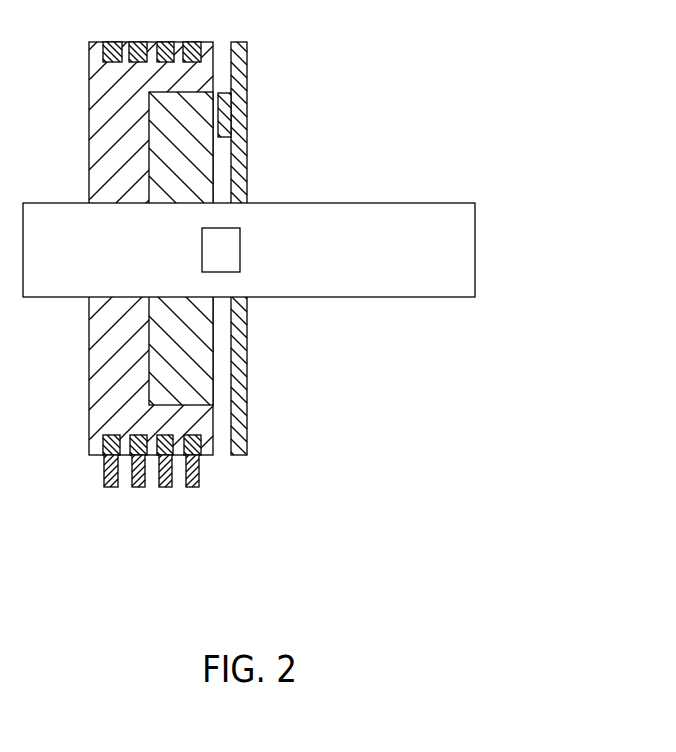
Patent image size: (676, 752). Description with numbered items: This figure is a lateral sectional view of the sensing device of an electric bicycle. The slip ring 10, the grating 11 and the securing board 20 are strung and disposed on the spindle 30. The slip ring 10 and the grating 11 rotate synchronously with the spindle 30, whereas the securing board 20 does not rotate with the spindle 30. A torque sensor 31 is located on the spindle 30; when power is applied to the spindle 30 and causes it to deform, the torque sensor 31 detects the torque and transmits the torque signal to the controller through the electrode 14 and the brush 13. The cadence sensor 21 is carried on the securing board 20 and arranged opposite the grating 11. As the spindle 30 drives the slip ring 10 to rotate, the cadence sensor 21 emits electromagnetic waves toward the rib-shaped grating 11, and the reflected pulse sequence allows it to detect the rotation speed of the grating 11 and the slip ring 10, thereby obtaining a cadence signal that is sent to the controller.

The slip ring 10 is at (110, 133).
The grating 11 is at (165, 350).
The brush 13 is at (105, 473).
The electrode 14 is at (105, 443).
The securing board 20 is at (245, 62).
The cadence sensor 21 is at (228, 112).
The spindle 30 is at (460, 249).
The torque sensor 31 is at (232, 242).